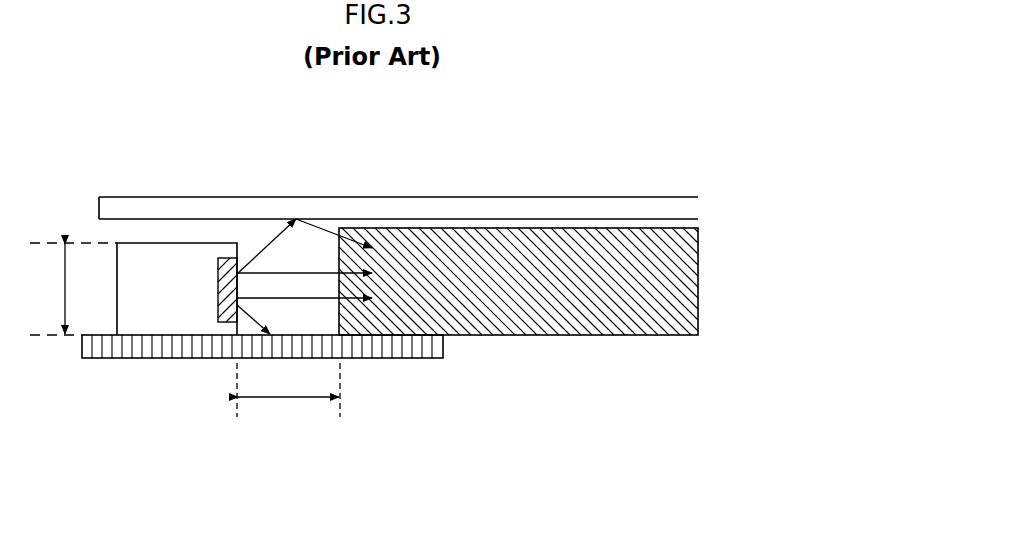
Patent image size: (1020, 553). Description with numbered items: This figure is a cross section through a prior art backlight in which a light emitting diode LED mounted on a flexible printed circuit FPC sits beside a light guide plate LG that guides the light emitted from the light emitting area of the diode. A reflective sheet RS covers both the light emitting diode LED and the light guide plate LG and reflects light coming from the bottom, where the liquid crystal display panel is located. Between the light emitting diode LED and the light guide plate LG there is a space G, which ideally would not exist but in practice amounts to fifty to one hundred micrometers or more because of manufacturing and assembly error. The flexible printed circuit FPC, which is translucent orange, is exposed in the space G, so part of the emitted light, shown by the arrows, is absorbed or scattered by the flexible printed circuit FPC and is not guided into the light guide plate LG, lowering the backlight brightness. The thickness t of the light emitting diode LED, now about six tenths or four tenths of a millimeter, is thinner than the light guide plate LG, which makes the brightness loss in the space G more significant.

The light emitting diode LED is at (172, 265).
The reflective sheet RS is at (548, 210).
The light guide plate LG is at (599, 305).
The flexible printed circuit FPC is at (160, 347).
The thickness t is at (73, 289).
The space G is at (288, 396).